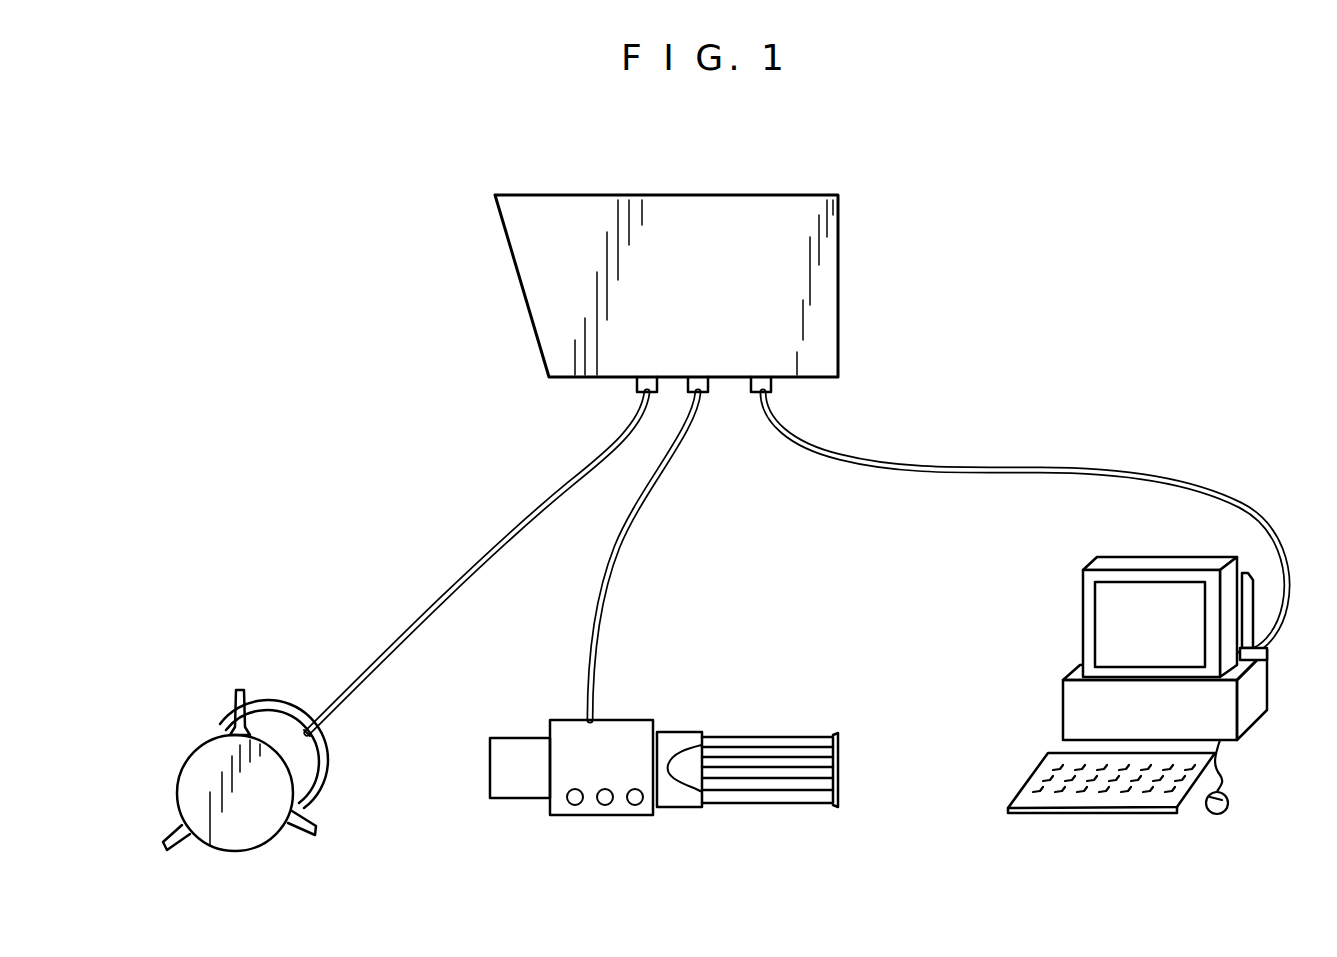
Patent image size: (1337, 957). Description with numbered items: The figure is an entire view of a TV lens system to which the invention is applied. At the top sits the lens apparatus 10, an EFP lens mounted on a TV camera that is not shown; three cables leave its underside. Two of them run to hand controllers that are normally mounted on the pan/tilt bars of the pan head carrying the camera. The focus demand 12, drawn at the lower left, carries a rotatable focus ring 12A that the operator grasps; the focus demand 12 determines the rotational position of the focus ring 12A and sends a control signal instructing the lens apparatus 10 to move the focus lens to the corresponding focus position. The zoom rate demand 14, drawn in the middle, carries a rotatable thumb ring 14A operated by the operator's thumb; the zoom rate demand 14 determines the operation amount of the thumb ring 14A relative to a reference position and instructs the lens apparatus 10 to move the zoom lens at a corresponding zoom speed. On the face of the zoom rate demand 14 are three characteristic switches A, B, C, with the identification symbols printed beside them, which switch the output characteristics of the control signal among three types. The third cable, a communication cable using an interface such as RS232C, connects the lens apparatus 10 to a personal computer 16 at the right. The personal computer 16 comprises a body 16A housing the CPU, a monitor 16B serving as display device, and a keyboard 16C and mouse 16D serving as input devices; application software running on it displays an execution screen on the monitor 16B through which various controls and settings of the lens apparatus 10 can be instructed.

The lens apparatus 10 is at (758, 222).
The focus demand 12 is at (255, 749).
The focus ring 12A is at (263, 821).
The zoom rate demand 14 is at (664, 758).
The thumb ring 14A is at (685, 800).
The characteristic switch A is at (565, 843).
The characteristic switch B is at (607, 843).
The characteristic switch C is at (640, 814).
The personal computer 16 is at (1122, 712).
The body 16A is at (1092, 710).
The monitor 16B is at (1122, 620).
The keyboard 16C is at (1018, 800).
The mouse 16D is at (1208, 815).